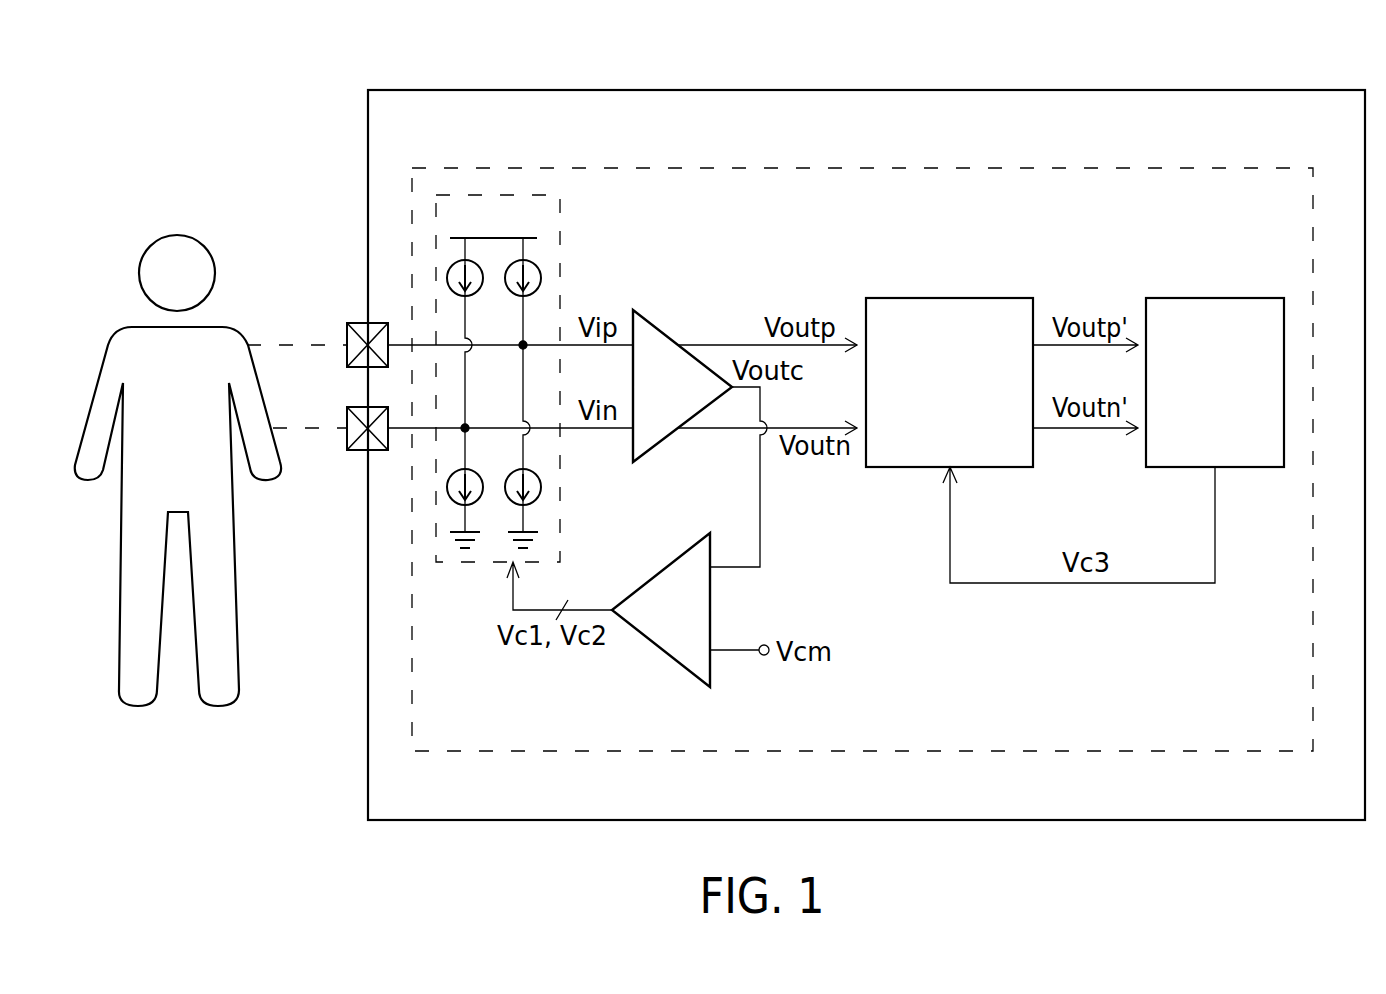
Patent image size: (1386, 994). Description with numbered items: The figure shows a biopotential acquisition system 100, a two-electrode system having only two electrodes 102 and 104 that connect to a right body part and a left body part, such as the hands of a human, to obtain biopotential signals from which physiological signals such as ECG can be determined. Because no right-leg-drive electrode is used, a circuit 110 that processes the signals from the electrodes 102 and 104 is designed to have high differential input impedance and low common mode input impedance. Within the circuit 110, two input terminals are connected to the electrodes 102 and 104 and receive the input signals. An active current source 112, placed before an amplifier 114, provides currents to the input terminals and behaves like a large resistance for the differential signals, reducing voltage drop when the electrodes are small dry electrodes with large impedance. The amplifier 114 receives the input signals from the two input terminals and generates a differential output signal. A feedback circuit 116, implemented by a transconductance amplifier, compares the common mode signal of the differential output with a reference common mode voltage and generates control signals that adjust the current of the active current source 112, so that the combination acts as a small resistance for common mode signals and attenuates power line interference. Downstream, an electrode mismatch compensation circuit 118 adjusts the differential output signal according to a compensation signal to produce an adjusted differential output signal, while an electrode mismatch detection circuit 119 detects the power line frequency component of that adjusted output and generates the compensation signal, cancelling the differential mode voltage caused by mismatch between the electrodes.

The biopotential acquisition system 100 is at (1242, 90).
The electrode 102 is at (357, 323).
The electrode 104 is at (360, 450).
The circuit 110 is at (1163, 168).
The active current source 112 is at (560, 240).
The amplifier 114 is at (655, 318).
The feedback circuit 116 is at (663, 562).
The electrode mismatch compensation circuit 118 is at (970, 298).
The electrode mismatch detection circuit 119 is at (1223, 298).